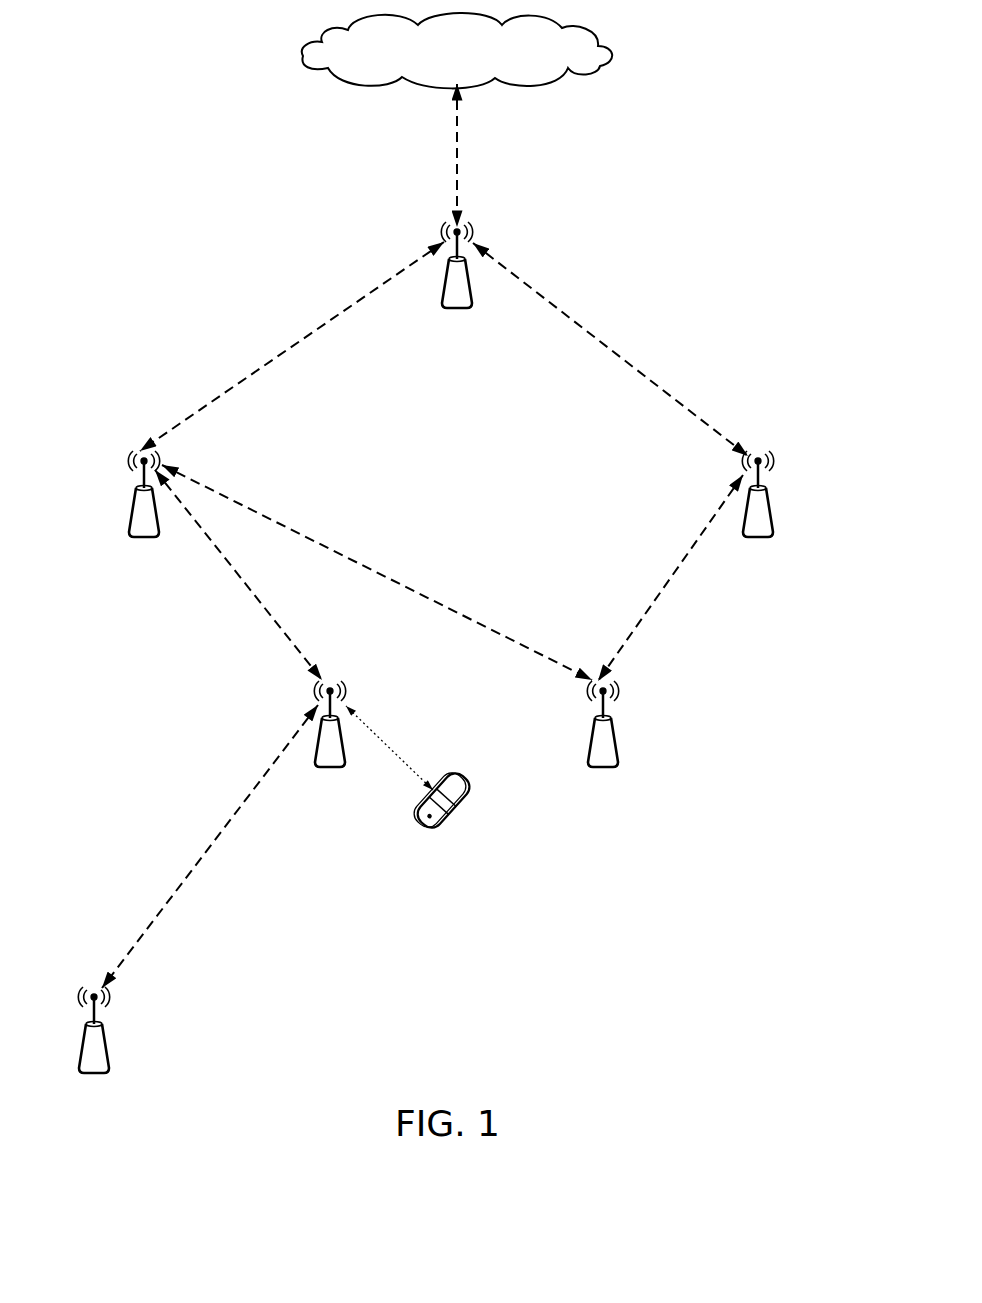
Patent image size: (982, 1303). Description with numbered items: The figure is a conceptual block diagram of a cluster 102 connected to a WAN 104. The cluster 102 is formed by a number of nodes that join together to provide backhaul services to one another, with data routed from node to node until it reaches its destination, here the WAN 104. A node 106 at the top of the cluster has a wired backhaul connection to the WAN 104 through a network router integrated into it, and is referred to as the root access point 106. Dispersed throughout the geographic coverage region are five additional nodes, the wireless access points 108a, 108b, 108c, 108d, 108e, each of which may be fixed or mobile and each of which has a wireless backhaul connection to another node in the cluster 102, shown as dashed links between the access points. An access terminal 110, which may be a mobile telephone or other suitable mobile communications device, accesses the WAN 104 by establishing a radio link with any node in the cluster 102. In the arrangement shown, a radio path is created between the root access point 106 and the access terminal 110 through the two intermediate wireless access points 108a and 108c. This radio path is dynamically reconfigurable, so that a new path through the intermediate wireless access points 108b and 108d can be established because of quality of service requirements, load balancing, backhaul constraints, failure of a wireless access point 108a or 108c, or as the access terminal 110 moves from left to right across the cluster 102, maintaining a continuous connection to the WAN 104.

The cluster 102 is at (797, 99).
The WAN 104 is at (473, 76).
The root access point 106 is at (440, 334).
The wireless access point 108a is at (176, 571).
The wireless access point 108b is at (789, 571).
The wireless access point 108c is at (308, 796).
The wireless access point 108d is at (633, 796).
The wireless access point 108e is at (118, 1103).
The access terminal 110 is at (443, 844).